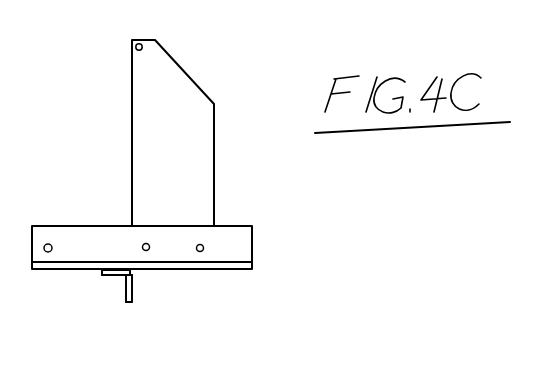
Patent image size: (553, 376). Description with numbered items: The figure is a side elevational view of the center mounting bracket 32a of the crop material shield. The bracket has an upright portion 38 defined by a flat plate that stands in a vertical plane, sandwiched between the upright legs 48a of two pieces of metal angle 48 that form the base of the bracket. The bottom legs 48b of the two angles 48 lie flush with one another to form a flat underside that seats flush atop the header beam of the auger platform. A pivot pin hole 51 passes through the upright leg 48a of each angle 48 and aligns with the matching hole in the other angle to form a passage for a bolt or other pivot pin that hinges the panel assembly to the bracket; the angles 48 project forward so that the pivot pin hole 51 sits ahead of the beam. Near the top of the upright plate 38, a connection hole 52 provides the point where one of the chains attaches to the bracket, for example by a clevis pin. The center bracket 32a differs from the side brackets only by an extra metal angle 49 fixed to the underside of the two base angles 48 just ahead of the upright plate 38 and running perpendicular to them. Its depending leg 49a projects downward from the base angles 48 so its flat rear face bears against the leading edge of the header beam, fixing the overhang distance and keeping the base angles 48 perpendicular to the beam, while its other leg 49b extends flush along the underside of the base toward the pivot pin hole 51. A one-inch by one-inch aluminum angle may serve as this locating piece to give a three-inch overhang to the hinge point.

The center mounting bracket 32a is at (84, 121).
The upright portion 38 is at (185, 103).
The connection hole 52 is at (142, 47).
The metal angle 48 is at (246, 243).
The upright leg 48a is at (107, 248).
The bottom leg 48b is at (250, 271).
The pivot pin hole 51 is at (53, 250).
The extra metal angle 49 is at (133, 300).
The depending leg 49a is at (134, 292).
The other leg 49b is at (114, 276).